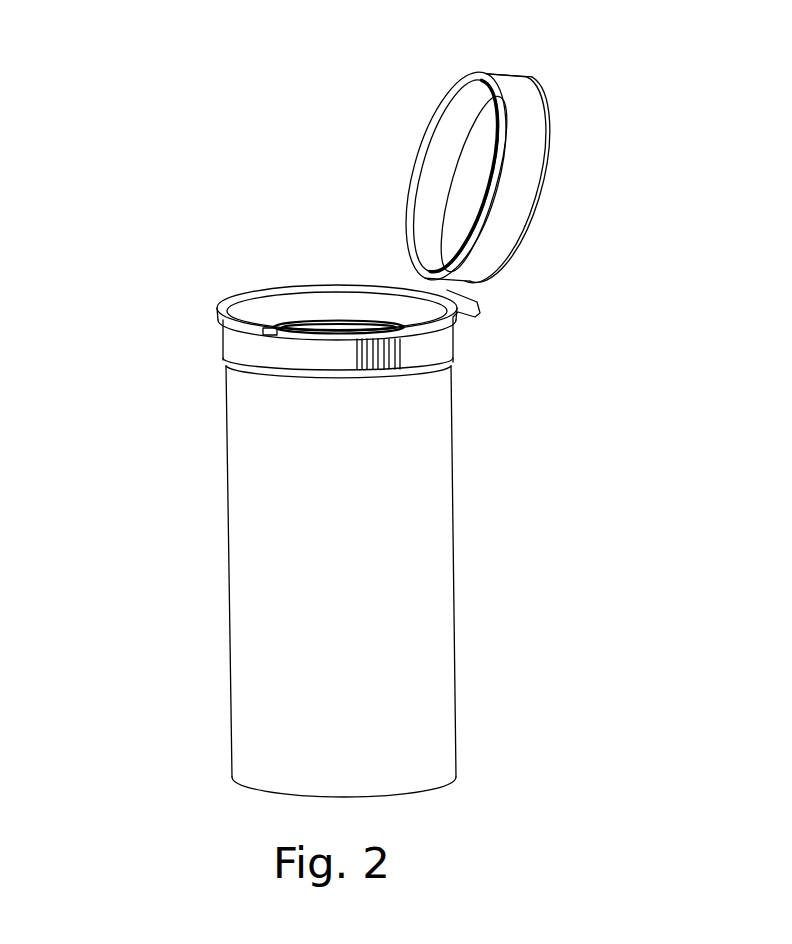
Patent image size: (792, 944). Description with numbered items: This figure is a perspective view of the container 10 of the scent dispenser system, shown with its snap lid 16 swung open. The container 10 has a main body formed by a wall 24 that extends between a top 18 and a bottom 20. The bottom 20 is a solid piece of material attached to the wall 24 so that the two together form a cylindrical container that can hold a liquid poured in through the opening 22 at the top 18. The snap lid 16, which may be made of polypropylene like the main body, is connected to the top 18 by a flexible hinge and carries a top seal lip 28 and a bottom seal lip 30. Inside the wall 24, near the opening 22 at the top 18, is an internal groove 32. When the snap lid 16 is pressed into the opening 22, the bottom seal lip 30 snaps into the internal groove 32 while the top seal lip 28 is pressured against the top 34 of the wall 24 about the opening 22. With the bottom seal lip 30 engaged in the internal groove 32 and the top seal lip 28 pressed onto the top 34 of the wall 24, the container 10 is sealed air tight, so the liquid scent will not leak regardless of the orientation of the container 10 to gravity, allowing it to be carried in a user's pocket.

The container 10 is at (681, 521).
The snap lid 16 is at (509, 150).
The top 18 is at (453, 387).
The bottom 20 is at (395, 797).
The opening 22 is at (295, 305).
The wall 24 is at (372, 602).
The top seal lip 28 is at (545, 172).
The bottom seal lip 30 is at (440, 102).
The internal groove 32 is at (332, 323).
The top of the wall 34 is at (257, 281).